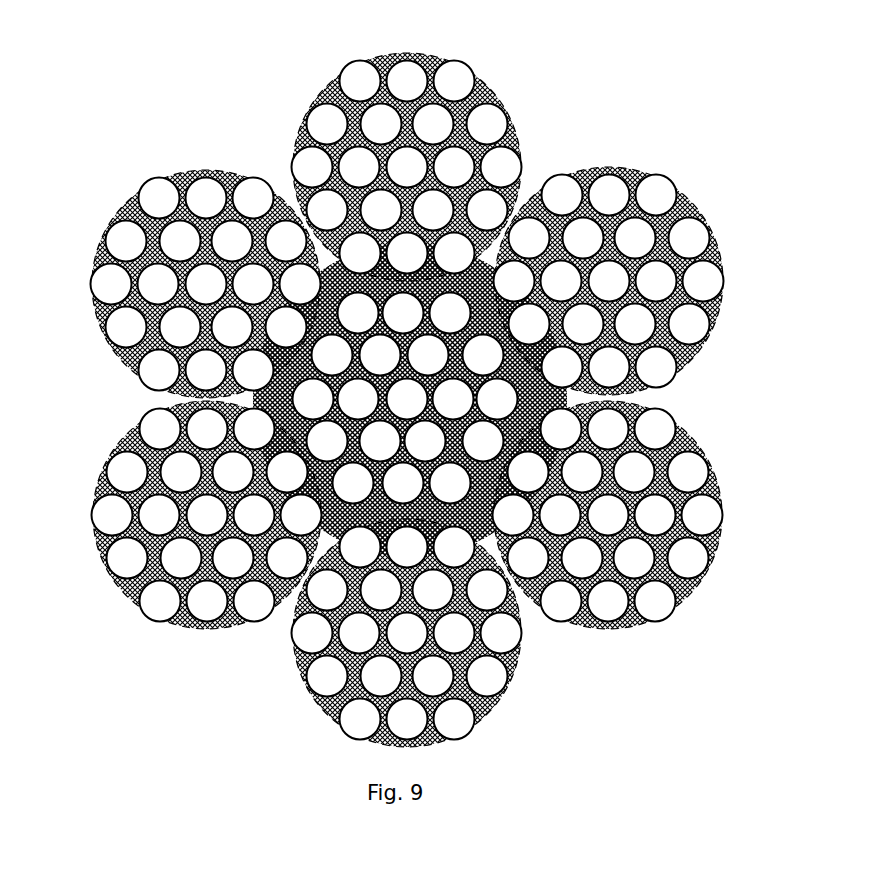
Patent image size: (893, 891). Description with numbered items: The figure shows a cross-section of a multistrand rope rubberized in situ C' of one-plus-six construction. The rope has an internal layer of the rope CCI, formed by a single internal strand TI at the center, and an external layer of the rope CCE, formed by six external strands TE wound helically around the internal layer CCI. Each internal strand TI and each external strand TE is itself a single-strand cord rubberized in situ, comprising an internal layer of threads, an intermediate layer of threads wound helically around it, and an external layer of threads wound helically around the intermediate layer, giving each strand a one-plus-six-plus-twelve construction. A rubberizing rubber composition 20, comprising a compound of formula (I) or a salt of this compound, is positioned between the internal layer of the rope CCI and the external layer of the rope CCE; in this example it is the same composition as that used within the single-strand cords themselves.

The multistrand rope rubberized in situ C' is at (395, 400).
The rubberizing rubber composition 20 is at (552, 543).
The internal layer of the rope CCI is at (451, 285).
The external layer of the rope CCE is at (649, 160).
The external strand TE is at (303, 95).
The internal strand TI is at (297, 399).